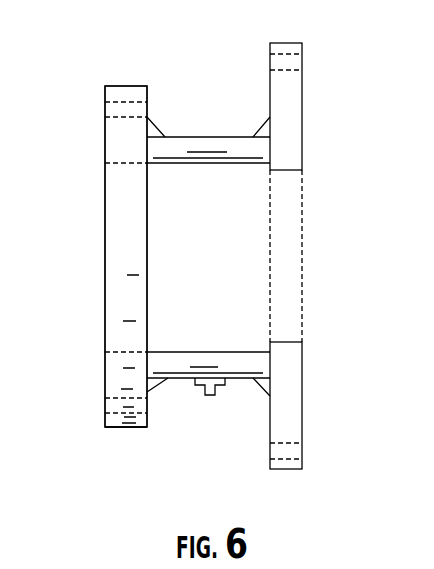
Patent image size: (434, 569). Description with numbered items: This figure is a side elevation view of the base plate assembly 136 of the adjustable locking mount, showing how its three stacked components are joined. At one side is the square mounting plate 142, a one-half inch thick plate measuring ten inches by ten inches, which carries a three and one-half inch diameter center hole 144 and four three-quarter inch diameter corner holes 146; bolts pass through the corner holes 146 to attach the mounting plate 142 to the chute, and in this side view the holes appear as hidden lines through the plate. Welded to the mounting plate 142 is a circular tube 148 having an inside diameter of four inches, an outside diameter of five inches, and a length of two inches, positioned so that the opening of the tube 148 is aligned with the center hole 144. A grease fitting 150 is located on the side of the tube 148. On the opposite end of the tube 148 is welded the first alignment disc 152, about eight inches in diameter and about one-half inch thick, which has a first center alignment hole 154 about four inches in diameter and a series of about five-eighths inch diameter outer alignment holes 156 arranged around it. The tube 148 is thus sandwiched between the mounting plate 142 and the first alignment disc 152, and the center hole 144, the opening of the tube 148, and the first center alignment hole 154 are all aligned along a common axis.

The spacer assembly 136 is at (98, 210).
The mounting plate 142 is at (302, 116).
The center hole 144 is at (302, 287).
The corner holes 146 is at (302, 63).
The tube 148 is at (211, 137).
The grease fitting 150 is at (210, 395).
The first alignment disc 152 is at (135, 428).
The first center alignment hole 154 is at (105, 247).
The outer alignment holes 156 is at (105, 109).